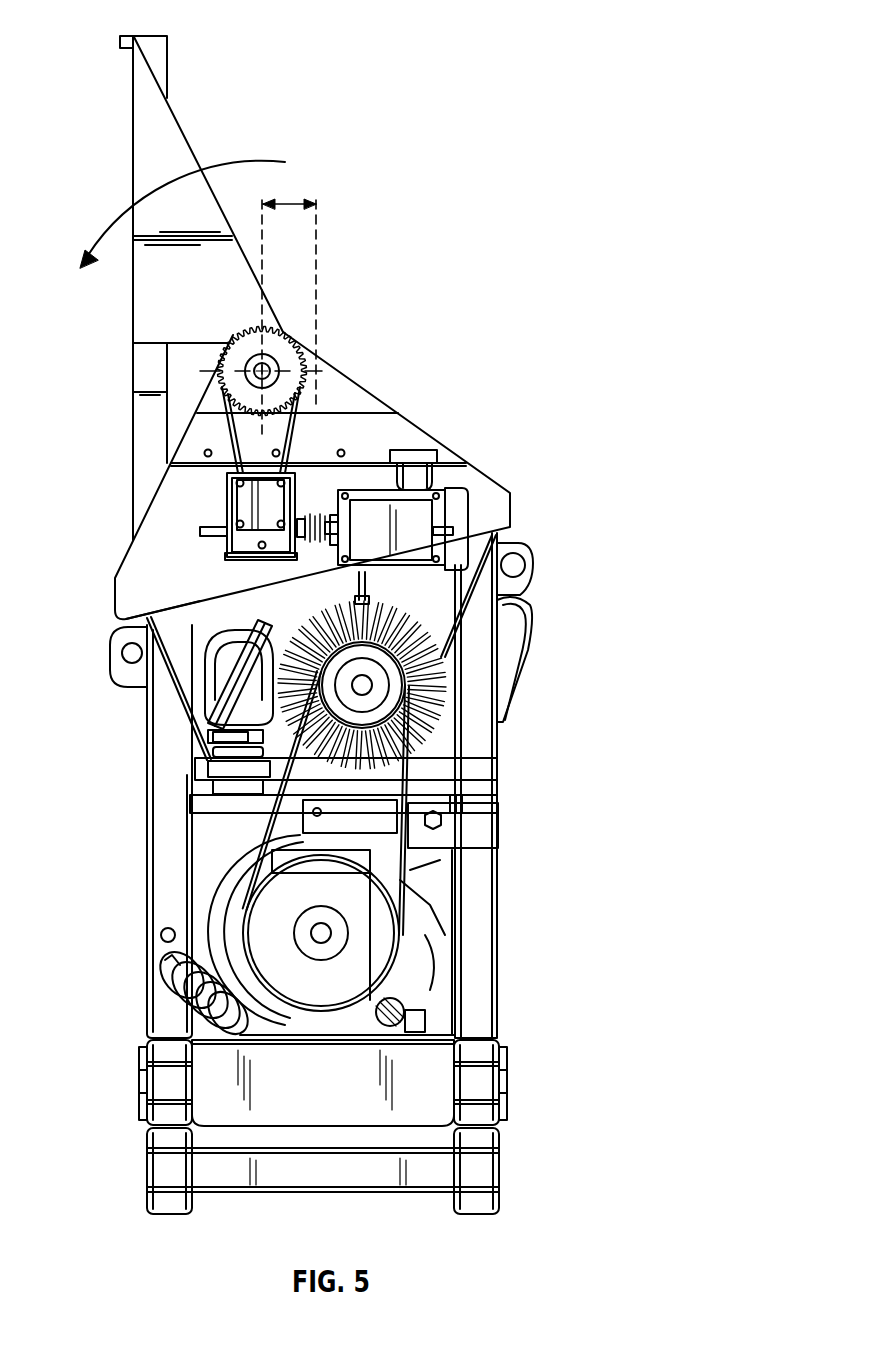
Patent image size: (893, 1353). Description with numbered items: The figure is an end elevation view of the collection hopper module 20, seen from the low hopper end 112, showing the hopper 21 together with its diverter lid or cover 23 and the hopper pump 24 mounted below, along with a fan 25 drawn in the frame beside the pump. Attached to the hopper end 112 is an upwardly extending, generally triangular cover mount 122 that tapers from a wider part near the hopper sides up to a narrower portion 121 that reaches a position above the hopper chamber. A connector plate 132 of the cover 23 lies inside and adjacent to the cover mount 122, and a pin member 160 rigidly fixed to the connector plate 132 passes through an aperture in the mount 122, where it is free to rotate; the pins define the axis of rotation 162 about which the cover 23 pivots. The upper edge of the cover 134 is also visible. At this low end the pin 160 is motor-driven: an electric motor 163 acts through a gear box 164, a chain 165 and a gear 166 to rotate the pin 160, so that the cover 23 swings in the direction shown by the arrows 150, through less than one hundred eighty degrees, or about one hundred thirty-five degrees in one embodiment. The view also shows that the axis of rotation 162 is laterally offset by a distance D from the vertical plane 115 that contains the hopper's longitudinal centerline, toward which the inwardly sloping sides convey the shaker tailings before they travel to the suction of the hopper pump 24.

The collection hopper module 20 is at (446, 43).
The hopper 21 is at (197, 627).
The diverter lid or cover 23 is at (128, 368).
The hopper pump 24 is at (310, 990).
The fan 25 is at (443, 655).
The hopper end 112 is at (185, 678).
The vertical plane 115 is at (319, 271).
The narrower portion 121 is at (345, 398).
The cover mount 122 is at (418, 440).
The connector plate 132 is at (170, 423).
The hood 134 is at (163, 128).
The arrows 150 is at (120, 212).
The pin member 160 is at (266, 350).
The axis of rotation 162 is at (252, 362).
The motor 163 is at (415, 518).
The gear box 164 is at (245, 515).
The chain 165 is at (299, 452).
The gear 166 is at (313, 362).
The distance D is at (288, 201).